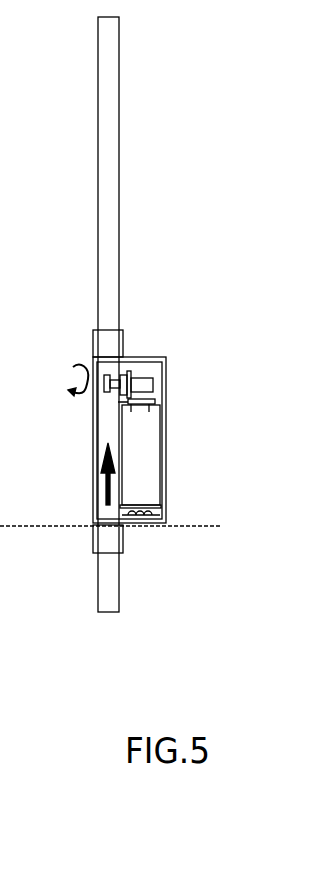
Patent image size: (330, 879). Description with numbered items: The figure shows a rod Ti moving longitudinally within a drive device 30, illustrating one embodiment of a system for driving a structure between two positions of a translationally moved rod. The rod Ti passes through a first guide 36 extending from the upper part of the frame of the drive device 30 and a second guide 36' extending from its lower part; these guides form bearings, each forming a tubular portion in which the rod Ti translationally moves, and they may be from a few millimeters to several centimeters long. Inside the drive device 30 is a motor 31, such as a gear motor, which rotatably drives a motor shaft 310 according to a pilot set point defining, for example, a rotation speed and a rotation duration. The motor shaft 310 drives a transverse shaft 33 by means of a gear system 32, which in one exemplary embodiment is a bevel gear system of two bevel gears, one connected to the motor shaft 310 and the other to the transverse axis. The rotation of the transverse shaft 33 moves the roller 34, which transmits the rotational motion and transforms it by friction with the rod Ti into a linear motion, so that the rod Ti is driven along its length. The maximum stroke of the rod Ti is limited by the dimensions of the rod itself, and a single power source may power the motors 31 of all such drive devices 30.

The rod Ti is at (104, 163).
The first guide 36 is at (143, 320).
The second guide 36' is at (65, 542).
The drive device 30 is at (190, 349).
The roller 34 is at (103, 381).
The transverse shaft 33 is at (100, 385).
The gear system 32 is at (150, 386).
The motor shaft 310 is at (138, 403).
The motor 31 is at (147, 448).